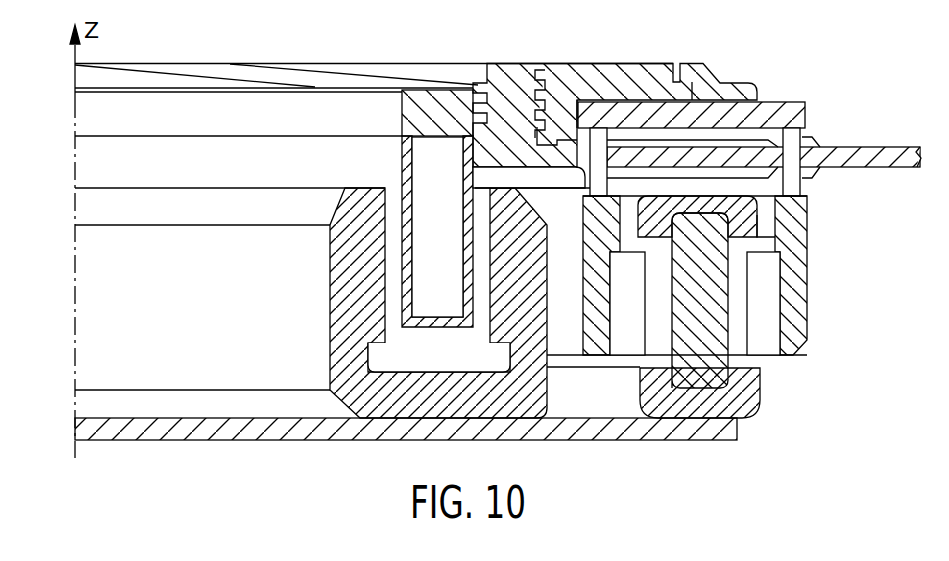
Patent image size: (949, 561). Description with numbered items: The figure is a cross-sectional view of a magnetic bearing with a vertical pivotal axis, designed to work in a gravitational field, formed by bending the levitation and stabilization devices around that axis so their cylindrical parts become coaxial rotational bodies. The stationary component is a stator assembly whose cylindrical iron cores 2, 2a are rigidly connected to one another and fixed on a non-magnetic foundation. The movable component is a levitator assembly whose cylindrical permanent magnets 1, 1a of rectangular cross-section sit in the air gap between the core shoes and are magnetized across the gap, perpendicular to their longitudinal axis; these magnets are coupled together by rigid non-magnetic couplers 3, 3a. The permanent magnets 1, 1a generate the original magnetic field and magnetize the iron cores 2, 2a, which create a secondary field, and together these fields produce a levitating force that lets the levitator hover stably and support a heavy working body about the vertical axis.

The cylindrical permanent magnet 1 is at (430, 178).
The cylindrical iron core 2 is at (357, 290).
The rigid non-magnetic coupler 3 is at (424, 110).
The cylindrical permanent magnet 1a is at (765, 292).
The cylindrical iron core 2a is at (760, 403).
The rigid non-magnetic coupler 3a is at (798, 224).